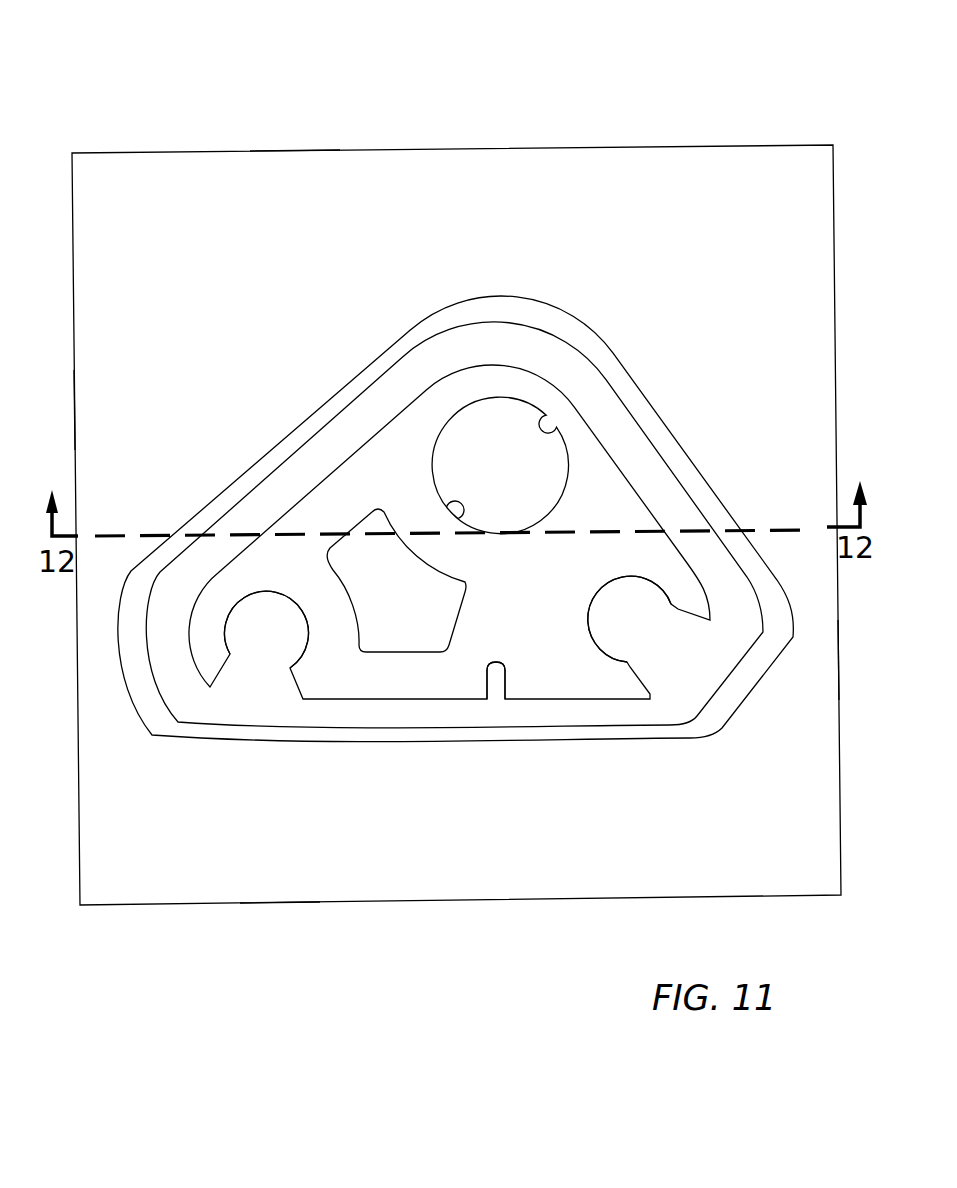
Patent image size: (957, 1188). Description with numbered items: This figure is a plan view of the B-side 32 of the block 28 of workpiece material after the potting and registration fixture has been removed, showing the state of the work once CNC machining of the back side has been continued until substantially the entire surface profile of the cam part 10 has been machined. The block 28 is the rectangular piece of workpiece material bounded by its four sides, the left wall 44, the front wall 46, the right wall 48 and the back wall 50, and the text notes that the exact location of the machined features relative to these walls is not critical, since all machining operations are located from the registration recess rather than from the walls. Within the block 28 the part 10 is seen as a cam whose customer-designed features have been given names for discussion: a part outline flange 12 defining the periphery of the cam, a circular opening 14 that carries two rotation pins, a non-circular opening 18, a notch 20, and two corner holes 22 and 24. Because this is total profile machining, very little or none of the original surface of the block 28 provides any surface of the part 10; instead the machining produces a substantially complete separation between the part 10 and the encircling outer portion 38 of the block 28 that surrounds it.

The part 10 is at (566, 712).
The part outline flange 12 is at (477, 390).
The circular opening 14 is at (508, 535).
The non-circular opening 18 is at (391, 654).
The notch 20 is at (485, 678).
The corner hole 22 is at (595, 593).
The corner hole 24 is at (277, 594).
The block 28 is at (252, 94).
The B-side 32 is at (421, 103).
The encircling remainder 38 is at (530, 187).
The left wall 44 is at (840, 657).
The front wall 46 is at (277, 905).
The right wall 48 is at (73, 408).
The back wall 50 is at (293, 150).